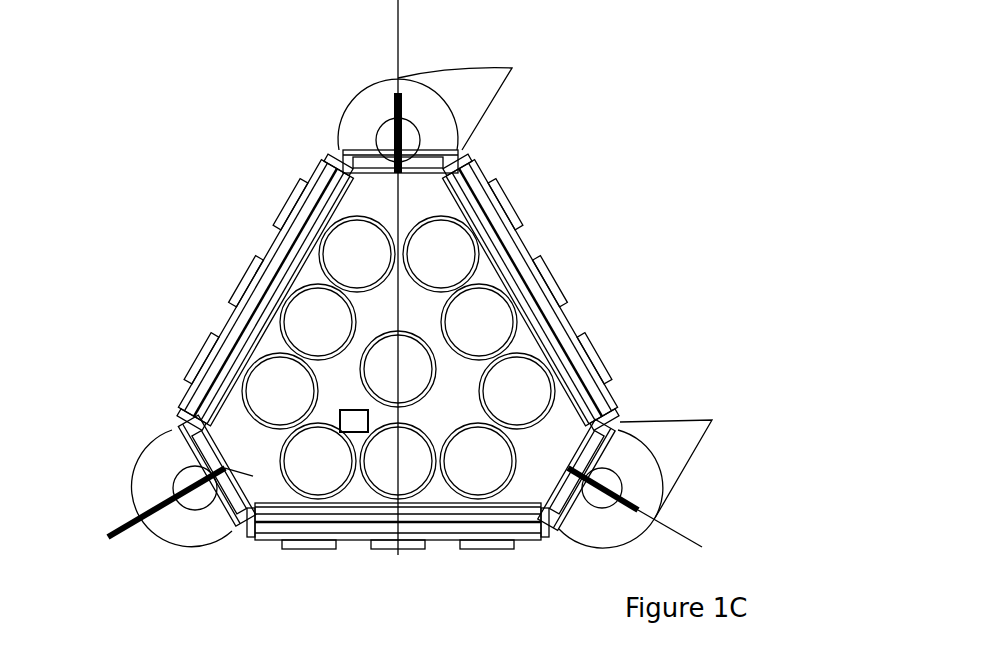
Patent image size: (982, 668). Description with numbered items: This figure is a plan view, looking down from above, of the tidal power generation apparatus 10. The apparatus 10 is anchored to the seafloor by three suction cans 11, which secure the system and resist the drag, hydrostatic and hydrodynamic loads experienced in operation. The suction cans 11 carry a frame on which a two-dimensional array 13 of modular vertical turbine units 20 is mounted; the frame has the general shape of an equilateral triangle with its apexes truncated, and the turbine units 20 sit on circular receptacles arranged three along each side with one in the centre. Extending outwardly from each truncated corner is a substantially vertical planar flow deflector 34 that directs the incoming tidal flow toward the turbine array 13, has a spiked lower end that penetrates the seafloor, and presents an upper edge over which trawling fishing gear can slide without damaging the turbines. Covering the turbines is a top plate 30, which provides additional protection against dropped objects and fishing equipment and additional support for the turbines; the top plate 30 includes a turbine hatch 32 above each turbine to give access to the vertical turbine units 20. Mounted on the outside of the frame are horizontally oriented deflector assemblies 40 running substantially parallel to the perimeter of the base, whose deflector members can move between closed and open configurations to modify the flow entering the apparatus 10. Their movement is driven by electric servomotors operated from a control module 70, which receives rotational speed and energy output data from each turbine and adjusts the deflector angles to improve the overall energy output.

The tidal power generation apparatus 10 is at (674, 100).
The suction can 11 is at (148, 450).
The two-dimensional array 13 is at (362, 495).
The modular vertical turbine unit 20 is at (320, 320).
The top plate 30 is at (250, 498).
The turbine hatch 32 is at (481, 482).
The flow deflector 34 is at (132, 527).
The deflector assembly 40 is at (227, 325).
The control module 70 is at (350, 413).